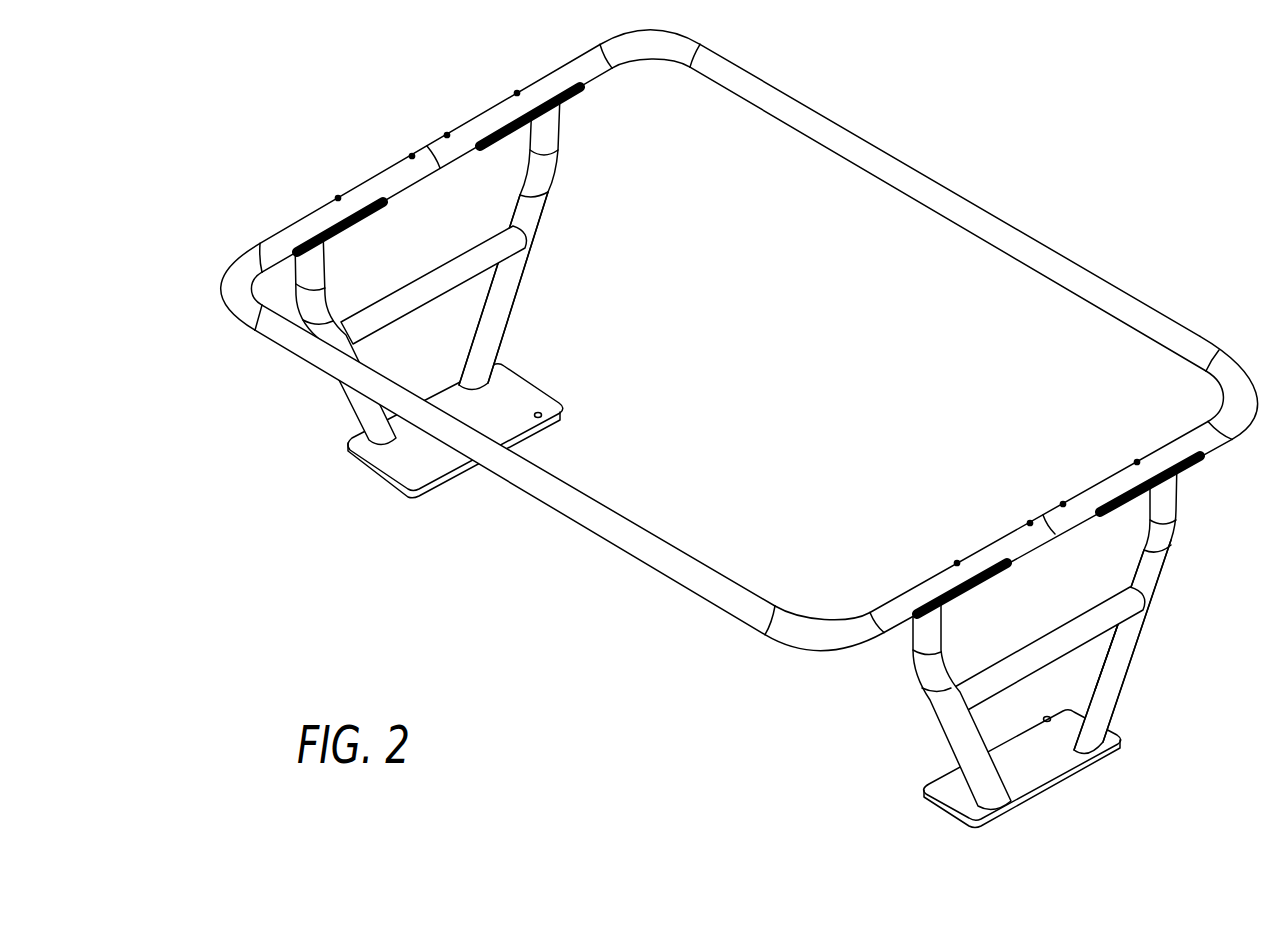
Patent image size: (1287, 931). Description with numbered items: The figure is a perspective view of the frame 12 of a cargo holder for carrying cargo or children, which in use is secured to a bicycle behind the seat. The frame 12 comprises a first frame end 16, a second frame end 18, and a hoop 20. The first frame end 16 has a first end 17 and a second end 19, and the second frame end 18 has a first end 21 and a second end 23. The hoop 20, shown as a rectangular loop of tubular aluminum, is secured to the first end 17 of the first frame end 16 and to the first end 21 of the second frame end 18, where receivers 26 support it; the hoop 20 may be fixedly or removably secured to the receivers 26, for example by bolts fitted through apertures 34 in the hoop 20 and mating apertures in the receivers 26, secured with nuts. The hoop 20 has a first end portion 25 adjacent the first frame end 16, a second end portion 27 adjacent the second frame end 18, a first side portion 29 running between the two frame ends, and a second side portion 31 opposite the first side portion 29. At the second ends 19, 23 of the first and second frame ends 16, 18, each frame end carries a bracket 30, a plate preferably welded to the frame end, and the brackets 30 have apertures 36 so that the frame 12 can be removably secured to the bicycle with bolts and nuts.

The frame 12 is at (361, 557).
The first frame end 16 is at (1120, 672).
The first end of the first frame end 17 is at (1160, 542).
The second frame end 18 is at (363, 416).
The second end of the first frame end 19 is at (1113, 702).
The hoop 20 is at (739, 340).
The first end of the second frame end 21 is at (547, 128).
The second end of the second frame end 23 is at (495, 325).
The first end portion 25 is at (1078, 497).
The receivers 26 is at (344, 231).
The second end portion 27 is at (465, 127).
The first side portion 29 is at (653, 553).
The bracket 30 is at (377, 470).
The second side portion 31 is at (883, 160).
The apertures 34 is at (338, 197).
The apertures 36 is at (440, 470).